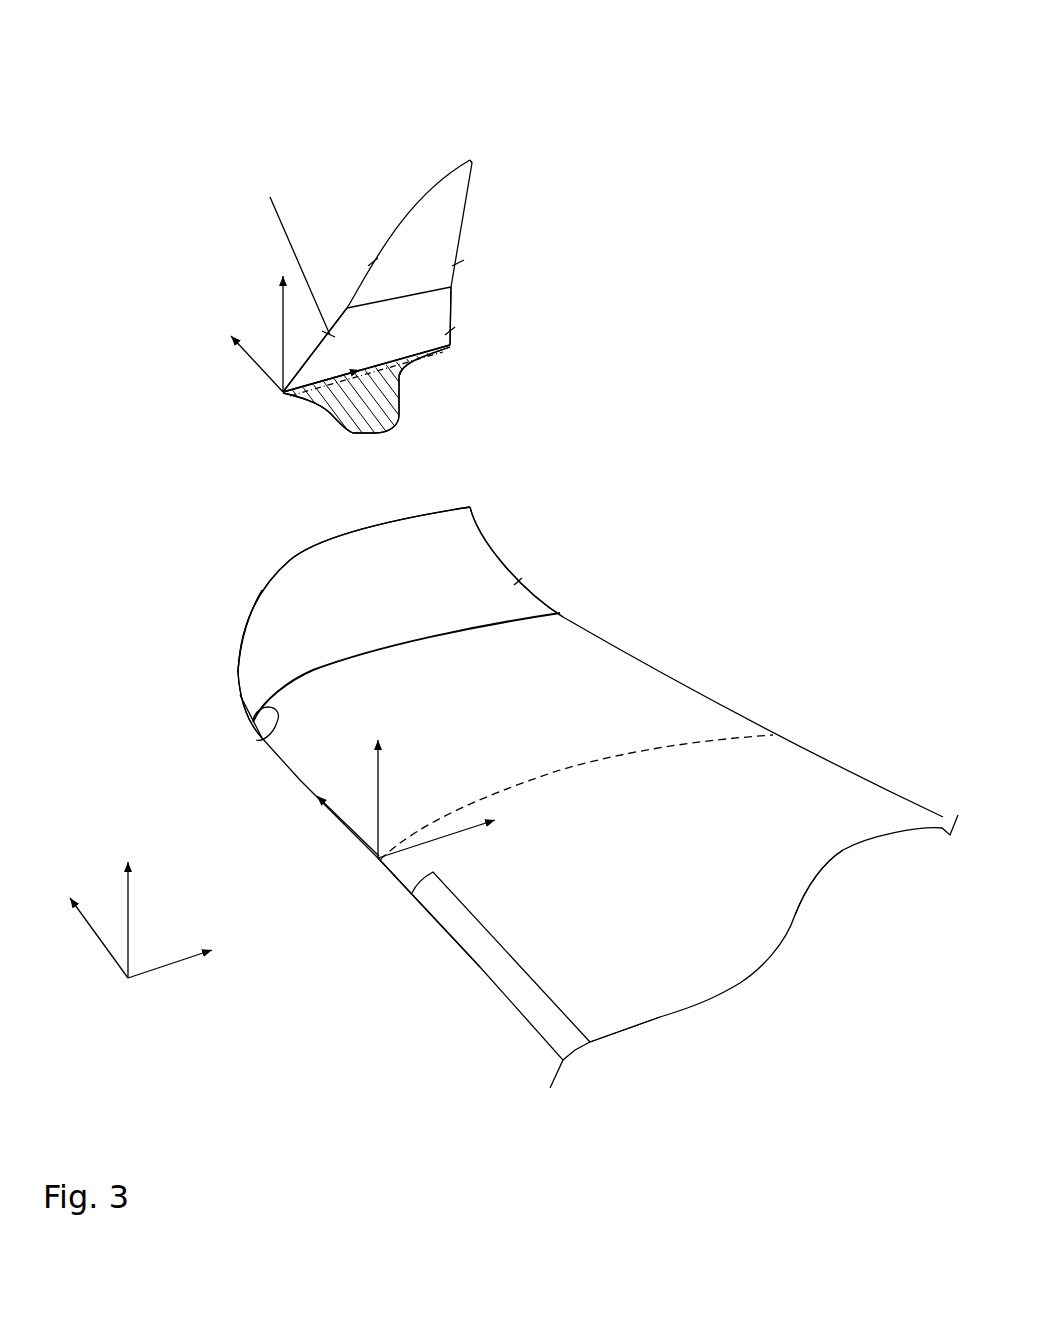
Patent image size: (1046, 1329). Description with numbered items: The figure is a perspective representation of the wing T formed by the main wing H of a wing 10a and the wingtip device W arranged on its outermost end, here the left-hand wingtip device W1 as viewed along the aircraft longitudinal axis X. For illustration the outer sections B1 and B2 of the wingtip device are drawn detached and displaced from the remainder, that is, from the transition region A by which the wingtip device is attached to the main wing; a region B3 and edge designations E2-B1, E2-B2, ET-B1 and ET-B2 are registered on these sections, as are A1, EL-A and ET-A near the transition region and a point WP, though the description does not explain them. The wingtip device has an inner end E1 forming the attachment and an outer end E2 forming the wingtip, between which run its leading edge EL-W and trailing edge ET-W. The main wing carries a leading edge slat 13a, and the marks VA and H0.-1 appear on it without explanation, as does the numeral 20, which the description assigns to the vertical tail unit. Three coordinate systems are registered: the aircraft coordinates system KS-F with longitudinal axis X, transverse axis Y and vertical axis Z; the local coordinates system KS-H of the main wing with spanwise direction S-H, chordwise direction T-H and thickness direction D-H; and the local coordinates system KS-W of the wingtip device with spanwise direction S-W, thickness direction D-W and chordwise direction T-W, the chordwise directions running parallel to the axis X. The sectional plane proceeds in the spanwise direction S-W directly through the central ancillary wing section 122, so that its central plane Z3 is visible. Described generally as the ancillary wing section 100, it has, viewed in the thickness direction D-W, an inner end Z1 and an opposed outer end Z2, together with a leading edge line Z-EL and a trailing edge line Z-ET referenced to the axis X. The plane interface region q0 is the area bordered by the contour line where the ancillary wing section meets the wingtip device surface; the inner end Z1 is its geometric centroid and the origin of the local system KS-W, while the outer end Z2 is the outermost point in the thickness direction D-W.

The wingtip device W is at (458, 60).
The left-hand wingtip device W1 is at (479, 140).
The first section of wingtip device B1 is at (440, 313).
The second section of wingtip device B2 is at (465, 188).
The third tool surface B3 is at (463, 170).
The outer end of wingtip device E2 is at (470, 158).
The edge between E2 and surface B1 E2-B1 is at (285, 256).
The edge between E2 and surface B2 E2-B2 is at (373, 262).
The engagement edge of surface B1 ET-B1 is at (450, 331).
The engagement edge of surface B2 ET-B2 is at (458, 263).
The local coordinates system of wingtip device KS-W is at (267, 324).
The wingtip device thickness direction D-W is at (252, 331).
The wingtip device spanwise direction S-W is at (236, 364).
The wingtip device chordwise direction T-W is at (330, 417).
The tool reference point WP is at (347, 309).
The plane interface region q0 is at (378, 357).
The central ancillary wing section 122 is at (438, 407).
The first end of ancillary wing section Z1 is at (405, 379).
The second end of ancillary wing section Z2 is at (398, 430).
The central plane of ancillary wing section Z3 is at (350, 433).
The trailing edge line of ancillary wing section Z-ET is at (400, 392).
The leading edge line of ancillary wing section Z-EL is at (337, 412).
The wing T is at (130, 317).
The ancillary wing section 100 is at (718, 376).
The main wing H is at (210, 453).
The vertical tail unit 20 is at (457, 545).
The transition region A is at (262, 610).
The surface portion A1 is at (260, 739).
The inner end of wingtip device E1 is at (233, 713).
The exit line of surface A EL-A is at (236, 657).
The wingtip device leading edge EL-W is at (232, 673).
The wingtip device trailing edge ET-W is at (493, 548).
The entry point on surface A ET-A is at (518, 582).
The local coordinates system of main wing KS-H is at (528, 781).
The main wing thickness direction D-H is at (406, 799).
The main wing spanwise direction S-H is at (331, 826).
The main wing chordwise direction T-H is at (436, 841).
The feed direction VA is at (405, 922).
The leading edge slat 13a is at (497, 963).
The wing 10a is at (806, 823).
The workpiece layer H0.-1 is at (869, 896).
The aircraft coordinates system KS-F is at (134, 965).
The aircraft longitudinal axis X is at (176, 966).
The aircraft transverse axis Y is at (86, 938).
The aircraft vertical axis Z is at (145, 918).